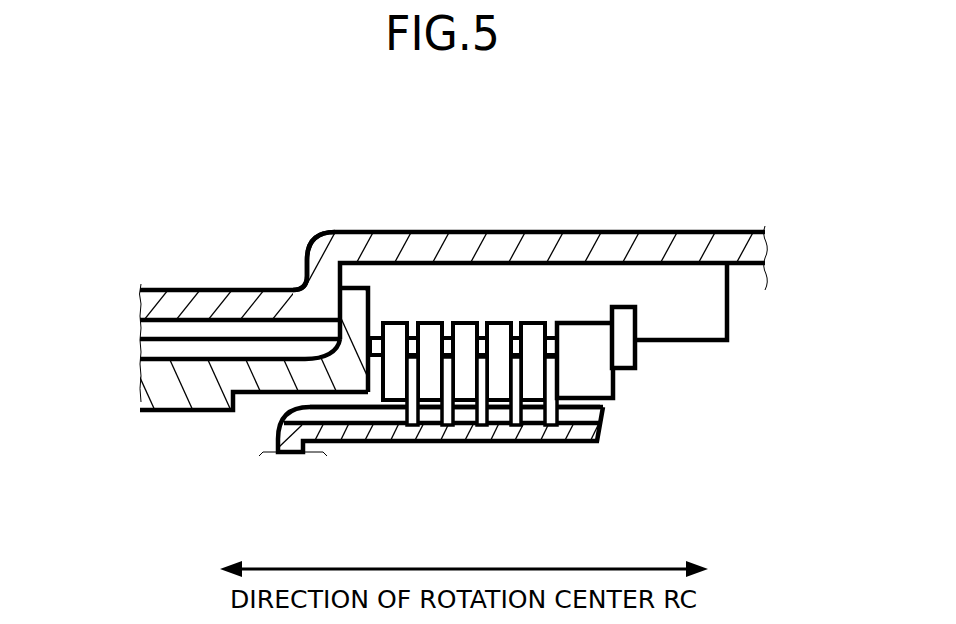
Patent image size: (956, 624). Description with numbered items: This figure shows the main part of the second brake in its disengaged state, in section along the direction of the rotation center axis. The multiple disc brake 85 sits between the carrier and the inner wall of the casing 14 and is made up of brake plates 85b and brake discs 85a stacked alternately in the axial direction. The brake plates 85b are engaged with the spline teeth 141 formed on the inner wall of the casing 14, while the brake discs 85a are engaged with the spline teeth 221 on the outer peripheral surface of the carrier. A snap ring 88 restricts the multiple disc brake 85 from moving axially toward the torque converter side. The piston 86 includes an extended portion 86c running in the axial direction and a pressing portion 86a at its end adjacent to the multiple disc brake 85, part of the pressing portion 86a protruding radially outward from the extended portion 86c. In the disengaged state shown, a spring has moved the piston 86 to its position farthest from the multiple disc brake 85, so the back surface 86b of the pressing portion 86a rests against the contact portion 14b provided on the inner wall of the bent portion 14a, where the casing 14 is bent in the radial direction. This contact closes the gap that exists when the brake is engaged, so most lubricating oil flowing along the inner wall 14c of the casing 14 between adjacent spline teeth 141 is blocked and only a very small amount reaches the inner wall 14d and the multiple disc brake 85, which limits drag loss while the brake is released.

The casing 14 is at (695, 245).
The bent portion 14a is at (301, 236).
The contact portion 14b is at (346, 303).
The inner wall 14c is at (214, 324).
The inner wall 14d is at (599, 266).
The spline teeth 141 is at (702, 307).
The multiple disc brake 85 is at (471, 326).
The brake discs 85a is at (482, 420).
The brake plates 85b is at (513, 333).
The piston 86 is at (182, 424).
The pressing portion 86a is at (373, 300).
The back surface 86b is at (335, 328).
The extended portion 86c is at (183, 385).
The snap ring 88 is at (618, 352).
The spline teeth 221 is at (593, 417).